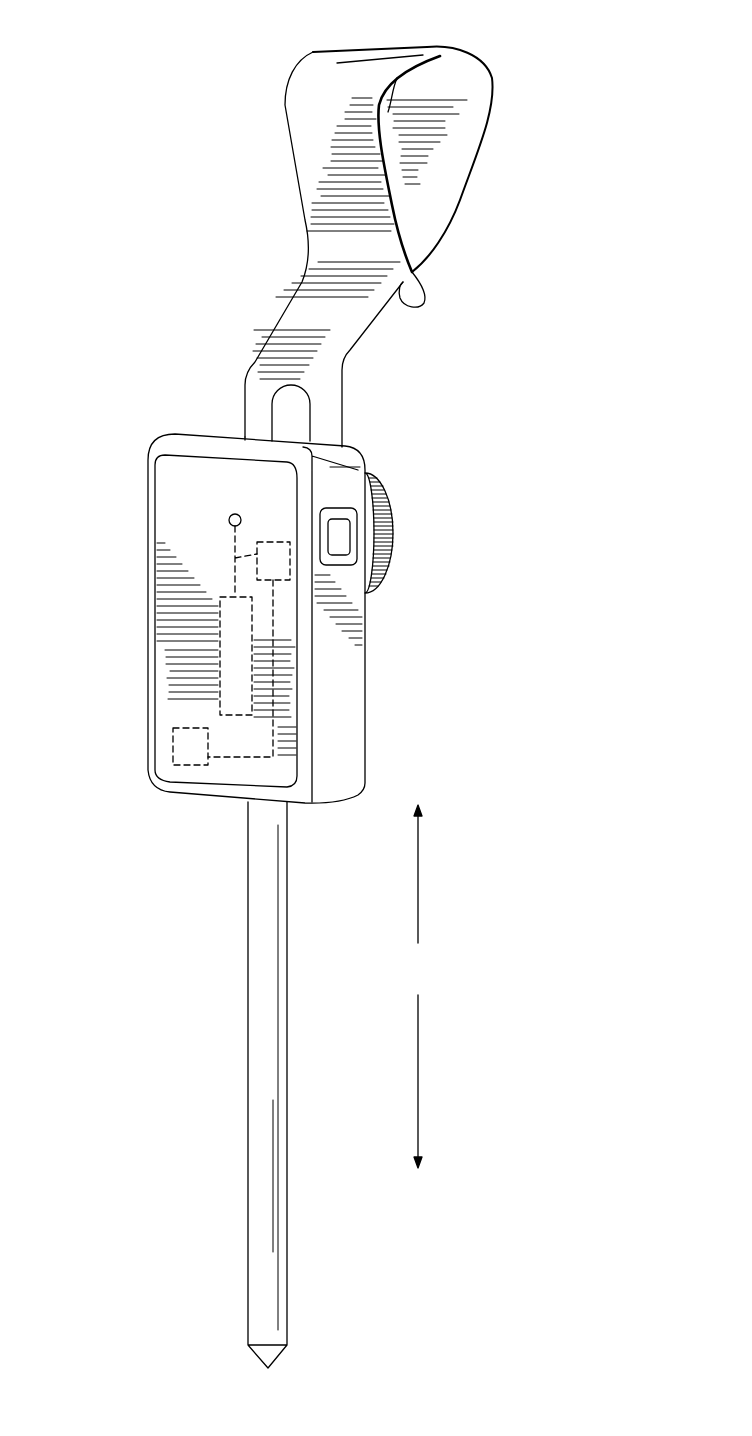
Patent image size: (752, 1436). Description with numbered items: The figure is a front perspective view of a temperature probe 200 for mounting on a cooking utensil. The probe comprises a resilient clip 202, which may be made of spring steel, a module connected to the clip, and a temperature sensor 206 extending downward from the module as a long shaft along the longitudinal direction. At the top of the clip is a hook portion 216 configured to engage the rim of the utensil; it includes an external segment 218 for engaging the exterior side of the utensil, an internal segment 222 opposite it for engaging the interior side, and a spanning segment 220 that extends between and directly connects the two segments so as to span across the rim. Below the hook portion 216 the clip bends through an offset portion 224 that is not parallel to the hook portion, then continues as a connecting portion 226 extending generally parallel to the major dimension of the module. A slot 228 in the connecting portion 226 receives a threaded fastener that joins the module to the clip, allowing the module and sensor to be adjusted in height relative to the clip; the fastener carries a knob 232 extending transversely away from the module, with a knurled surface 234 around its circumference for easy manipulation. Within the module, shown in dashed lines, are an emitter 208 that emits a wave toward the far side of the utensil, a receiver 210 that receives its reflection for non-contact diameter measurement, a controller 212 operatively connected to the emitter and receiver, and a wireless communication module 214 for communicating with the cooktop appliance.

The temperature probe 200 is at (85, 218).
The resilient clip 202 is at (580, 67).
The temperature sensor 206 is at (262, 1003).
The emitter 208 is at (225, 517).
The receiver 210 is at (220, 692).
The controller 212 is at (290, 580).
The wireless communication module 214 is at (192, 765).
The hook portion 216 is at (190, 60).
The external segment 218 is at (427, 215).
The spanning segment 220 is at (428, 58).
The internal segment 222 is at (313, 211).
The offset portion 224 is at (363, 337).
The connecting portion 226 is at (330, 422).
The slot 228 is at (283, 410).
The knob 232 is at (392, 530).
The knurled surface 234 is at (375, 568).